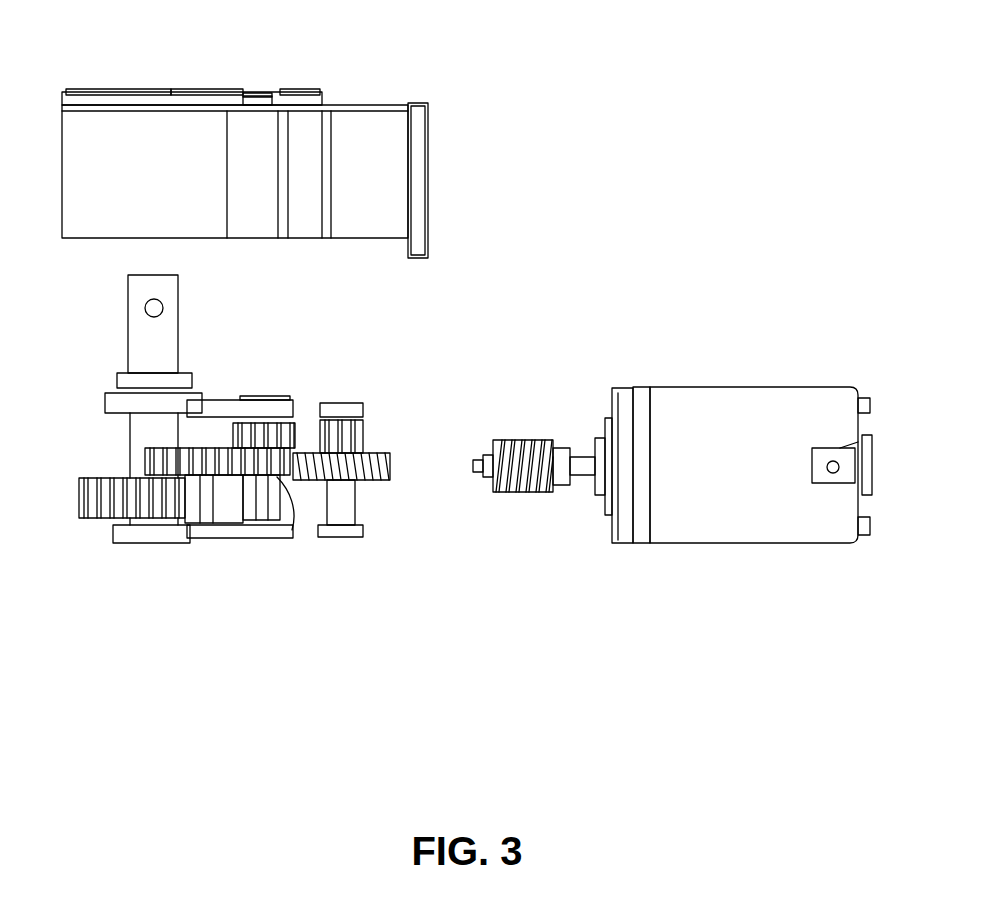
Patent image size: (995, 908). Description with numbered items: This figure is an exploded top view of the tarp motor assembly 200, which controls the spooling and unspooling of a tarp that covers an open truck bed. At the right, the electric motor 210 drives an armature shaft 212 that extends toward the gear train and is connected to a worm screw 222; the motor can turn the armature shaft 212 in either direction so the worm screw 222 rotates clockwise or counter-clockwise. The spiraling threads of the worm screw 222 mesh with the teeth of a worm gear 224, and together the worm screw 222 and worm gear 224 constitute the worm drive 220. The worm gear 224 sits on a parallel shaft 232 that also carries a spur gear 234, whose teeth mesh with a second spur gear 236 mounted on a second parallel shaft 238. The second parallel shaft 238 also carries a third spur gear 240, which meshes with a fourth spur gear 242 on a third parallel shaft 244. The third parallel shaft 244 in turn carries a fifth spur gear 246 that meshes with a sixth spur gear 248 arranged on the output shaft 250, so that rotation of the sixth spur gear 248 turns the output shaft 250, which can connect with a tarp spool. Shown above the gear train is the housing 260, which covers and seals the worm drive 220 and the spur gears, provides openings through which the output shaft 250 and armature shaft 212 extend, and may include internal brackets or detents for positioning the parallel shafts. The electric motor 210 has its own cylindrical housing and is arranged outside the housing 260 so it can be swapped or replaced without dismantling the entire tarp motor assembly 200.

The tarp motor assembly 200 is at (608, 140).
The electric motor 210 is at (725, 400).
The armature shaft 212 is at (583, 465).
The worm drive 220 is at (293, 548).
The worm screw 222 is at (538, 445).
The worm gear 224 is at (385, 455).
The parallel shaft 232 is at (343, 508).
The spur gear 234 is at (337, 440).
The second spur gear 236 is at (310, 427).
The second parallel shaft 238 is at (267, 505).
The third spur gear 240 is at (292, 530).
The fourth spur gear 242 is at (205, 462).
The third parallel shaft 244 is at (215, 430).
The fifth spur gear 246 is at (215, 508).
The sixth spur gear 248 is at (148, 502).
The output shaft 250 is at (155, 355).
The housing 260 is at (62, 78).